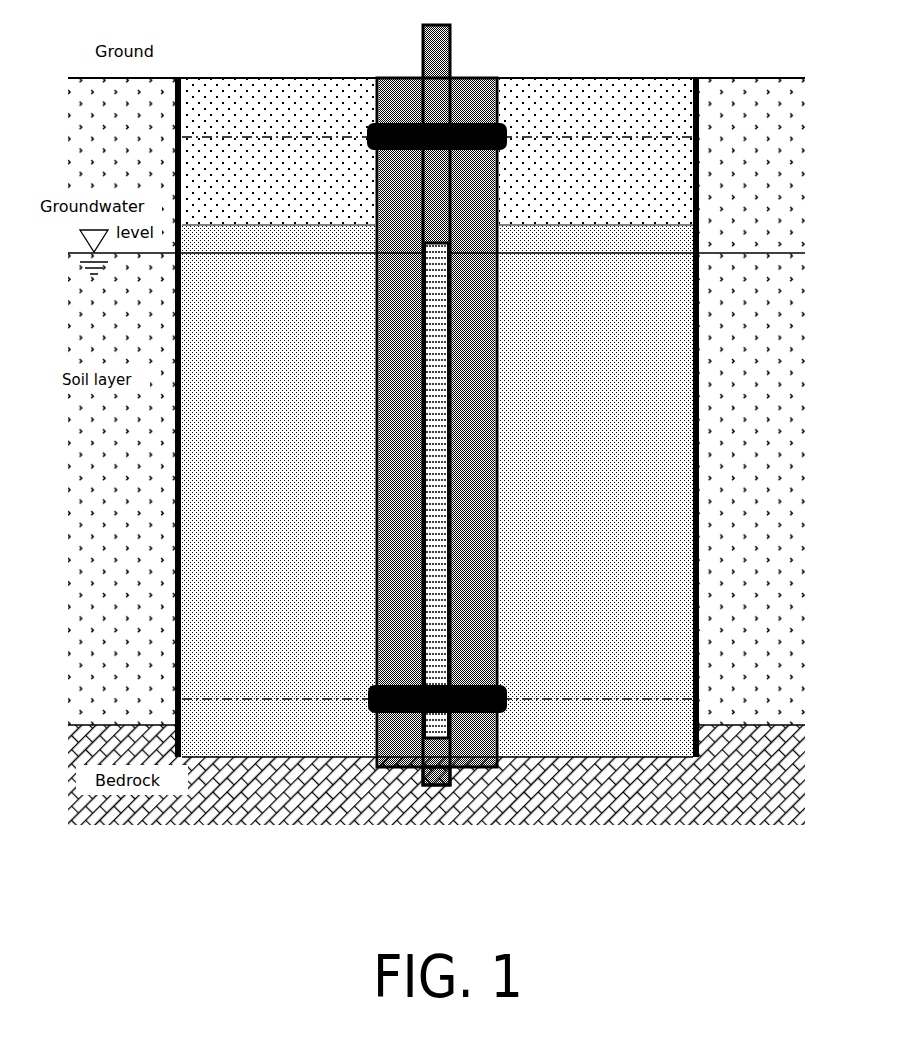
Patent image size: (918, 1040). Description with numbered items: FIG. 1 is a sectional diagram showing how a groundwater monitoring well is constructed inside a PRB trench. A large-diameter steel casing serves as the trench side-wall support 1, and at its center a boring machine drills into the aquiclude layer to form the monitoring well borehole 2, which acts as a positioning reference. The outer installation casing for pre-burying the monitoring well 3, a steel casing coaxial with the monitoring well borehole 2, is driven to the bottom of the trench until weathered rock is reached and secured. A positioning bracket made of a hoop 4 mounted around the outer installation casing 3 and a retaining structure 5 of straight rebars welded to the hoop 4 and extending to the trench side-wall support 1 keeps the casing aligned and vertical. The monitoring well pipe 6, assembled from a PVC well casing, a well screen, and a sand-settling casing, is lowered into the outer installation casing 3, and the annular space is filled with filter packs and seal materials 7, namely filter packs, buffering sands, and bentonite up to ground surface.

The trench side-wall support 1 is at (180, 333).
The monitoring well borehole 2 is at (438, 787).
The outer installation casing for pre-burying the monitoring well 3 is at (648, 305).
The hoop 4 is at (503, 133).
The retaining structure 5 is at (550, 698).
The monitoring well pipe 6 is at (450, 588).
The filter packs and seal materials 7 is at (473, 500).